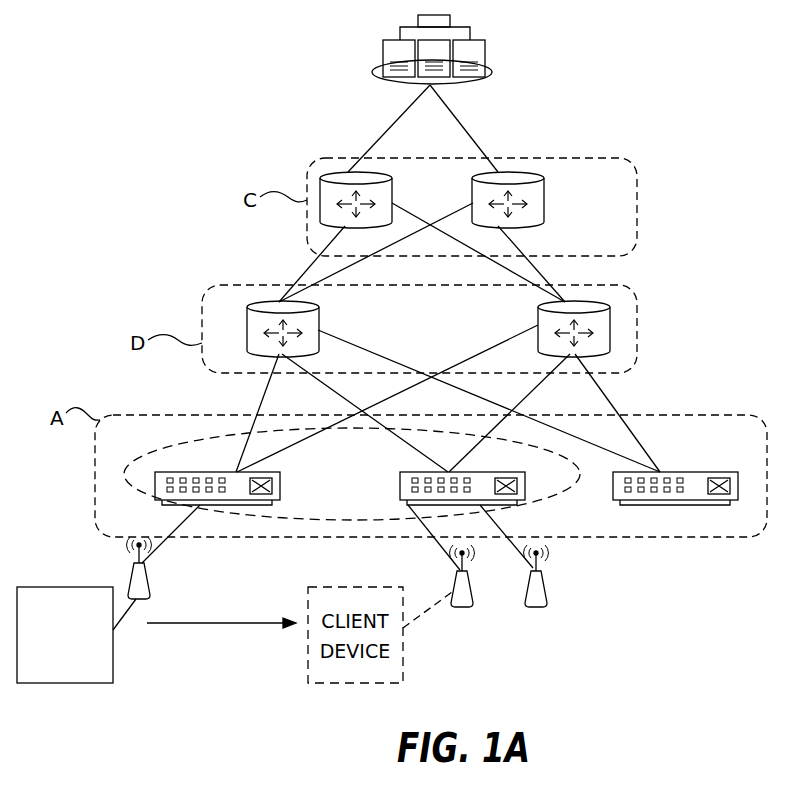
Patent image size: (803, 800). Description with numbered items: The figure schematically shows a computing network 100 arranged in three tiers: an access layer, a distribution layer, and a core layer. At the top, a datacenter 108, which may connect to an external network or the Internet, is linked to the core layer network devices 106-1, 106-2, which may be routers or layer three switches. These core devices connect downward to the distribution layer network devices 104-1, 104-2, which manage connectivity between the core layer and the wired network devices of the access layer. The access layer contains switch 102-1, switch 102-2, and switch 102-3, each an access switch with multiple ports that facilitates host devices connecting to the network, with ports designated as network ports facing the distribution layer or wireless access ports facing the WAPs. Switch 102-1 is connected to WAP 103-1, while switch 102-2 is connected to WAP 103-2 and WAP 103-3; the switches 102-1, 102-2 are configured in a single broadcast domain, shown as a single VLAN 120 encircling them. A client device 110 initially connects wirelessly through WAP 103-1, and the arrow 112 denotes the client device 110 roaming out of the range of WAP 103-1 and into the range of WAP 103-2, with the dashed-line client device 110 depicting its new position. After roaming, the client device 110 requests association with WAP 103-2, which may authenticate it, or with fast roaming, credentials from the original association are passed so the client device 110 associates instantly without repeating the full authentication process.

The computing network 100 is at (673, 46).
The datacenter 108 is at (492, 64).
The network device 106-1 is at (392, 181).
The network device 106-2 is at (544, 181).
The network device 104-1 is at (318, 311).
The network device 104-2 is at (538, 311).
The switch 102-1 is at (276, 474).
The switch 102-2 is at (401, 482).
The switch 102-3 is at (735, 452).
The VLAN 120 is at (553, 497).
The client device 110 is at (69, 584).
The arrow 112 is at (178, 626).
The WAP 103-1 is at (182, 578).
The WAP 103-2 is at (468, 607).
The WAP 103-3 is at (548, 598).